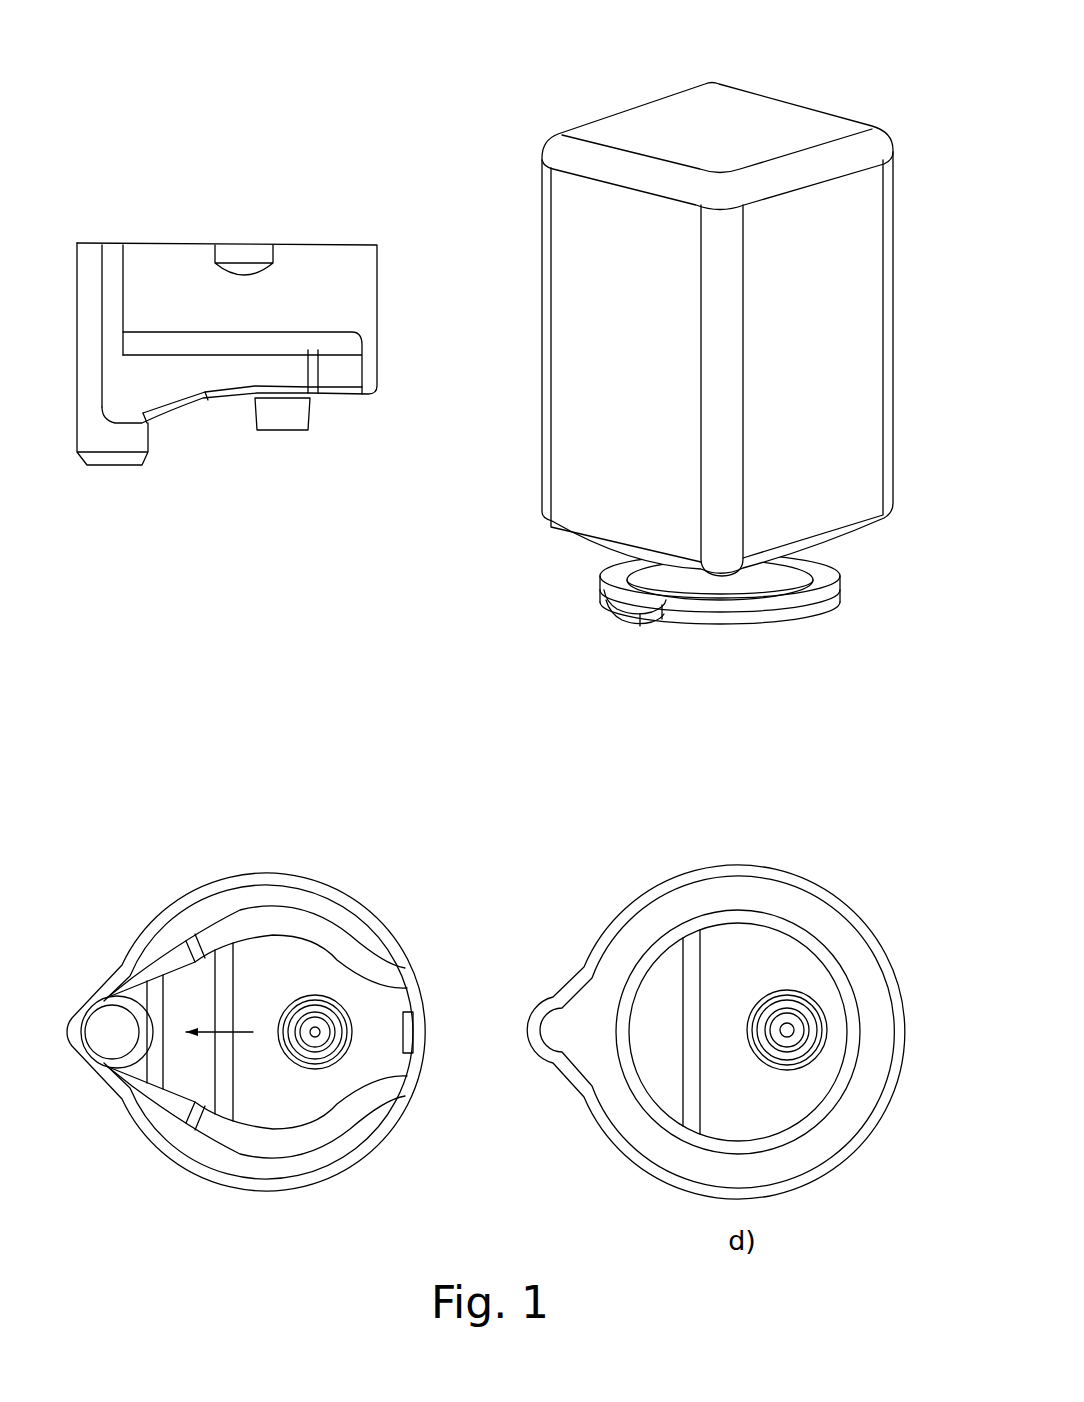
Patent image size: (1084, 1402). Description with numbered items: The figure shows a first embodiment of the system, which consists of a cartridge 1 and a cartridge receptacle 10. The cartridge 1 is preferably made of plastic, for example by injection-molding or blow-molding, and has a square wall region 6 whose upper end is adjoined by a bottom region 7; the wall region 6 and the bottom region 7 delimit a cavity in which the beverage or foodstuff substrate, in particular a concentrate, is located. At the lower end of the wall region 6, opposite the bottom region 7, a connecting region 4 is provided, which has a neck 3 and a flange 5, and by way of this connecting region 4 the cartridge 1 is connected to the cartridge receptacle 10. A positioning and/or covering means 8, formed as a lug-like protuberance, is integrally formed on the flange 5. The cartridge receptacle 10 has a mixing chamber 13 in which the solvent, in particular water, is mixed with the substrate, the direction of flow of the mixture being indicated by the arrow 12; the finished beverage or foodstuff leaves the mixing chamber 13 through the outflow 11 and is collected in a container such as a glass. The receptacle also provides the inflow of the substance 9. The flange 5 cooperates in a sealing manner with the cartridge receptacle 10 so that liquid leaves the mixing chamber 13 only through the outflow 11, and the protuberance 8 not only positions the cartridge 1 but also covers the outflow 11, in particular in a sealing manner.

The cartridge 1 is at (752, 363).
The neck 3 is at (772, 578).
The connecting region 4 is at (868, 583).
The flange 5 is at (612, 575).
The wall region 6 is at (850, 313).
The bottom region 7 is at (672, 122).
The positioning and/or covering means 8 is at (638, 598).
The inflow of the substance, piercing means 9 is at (283, 433).
The cartridge receptacle 10 is at (262, 216).
The outflow 11 is at (120, 440).
The direction of flow 12 is at (208, 1038).
The mixing chamber 13 is at (285, 1090).